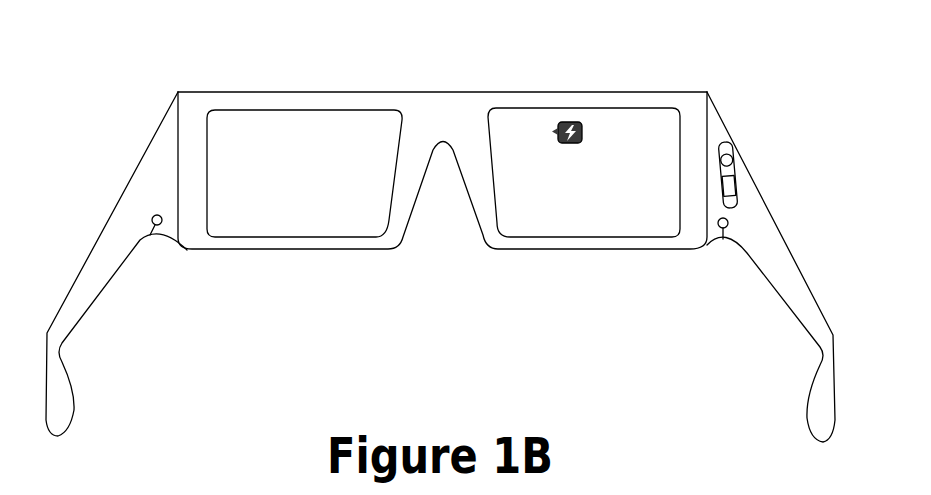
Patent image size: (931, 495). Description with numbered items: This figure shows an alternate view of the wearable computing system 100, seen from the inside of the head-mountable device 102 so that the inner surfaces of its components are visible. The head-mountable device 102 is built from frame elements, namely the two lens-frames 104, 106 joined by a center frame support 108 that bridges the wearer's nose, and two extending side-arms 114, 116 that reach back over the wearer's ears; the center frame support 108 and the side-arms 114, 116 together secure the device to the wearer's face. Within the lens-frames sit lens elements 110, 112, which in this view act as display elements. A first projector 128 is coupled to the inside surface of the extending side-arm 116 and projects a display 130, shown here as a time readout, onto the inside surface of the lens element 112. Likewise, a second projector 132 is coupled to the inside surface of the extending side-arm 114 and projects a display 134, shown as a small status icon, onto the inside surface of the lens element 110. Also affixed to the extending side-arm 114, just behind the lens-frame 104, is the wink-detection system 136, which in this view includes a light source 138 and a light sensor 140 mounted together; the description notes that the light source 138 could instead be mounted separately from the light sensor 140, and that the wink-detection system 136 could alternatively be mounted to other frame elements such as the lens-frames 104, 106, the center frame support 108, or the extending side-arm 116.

The wearable computing system 100 is at (376, 73).
The head-mountable device 102 is at (740, 84).
The lens-frame 104 is at (670, 249).
The lens-frame 106 is at (222, 251).
The center frame support 108 is at (440, 92).
The lens element 110 is at (547, 227).
The lens element 112 is at (320, 228).
The extending side-arm 114 is at (763, 198).
The extending side-arm 116 is at (102, 231).
The first projector 128 is at (141, 241).
The display 130 is at (300, 137).
The second projector 132 is at (713, 247).
The display 134 is at (553, 131).
The wink-detection system 136 is at (728, 142).
The light source 138 is at (718, 152).
The light sensor 140 is at (718, 180).